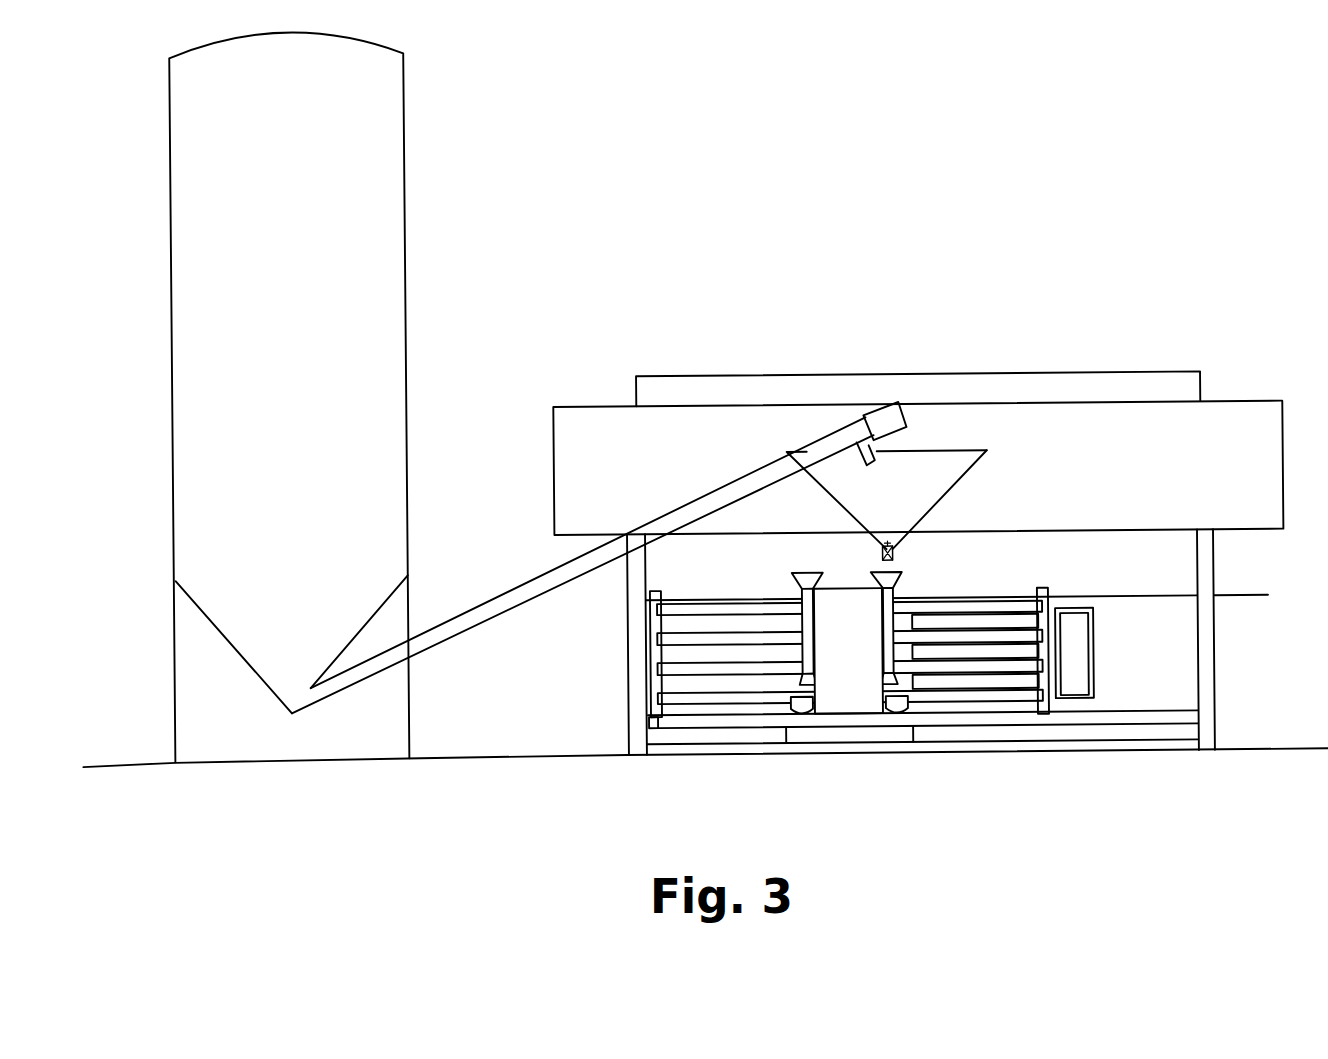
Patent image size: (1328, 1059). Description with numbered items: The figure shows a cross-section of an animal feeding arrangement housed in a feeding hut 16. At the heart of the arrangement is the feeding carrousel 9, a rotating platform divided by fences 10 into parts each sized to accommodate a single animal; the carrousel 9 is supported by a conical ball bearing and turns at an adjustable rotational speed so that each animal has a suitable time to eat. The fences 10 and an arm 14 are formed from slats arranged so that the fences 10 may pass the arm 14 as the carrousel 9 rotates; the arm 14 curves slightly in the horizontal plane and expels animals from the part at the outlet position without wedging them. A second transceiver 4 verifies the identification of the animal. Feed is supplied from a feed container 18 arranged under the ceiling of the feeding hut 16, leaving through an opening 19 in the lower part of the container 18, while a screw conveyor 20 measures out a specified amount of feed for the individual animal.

The second transceiver 4 is at (1073, 683).
The feeding carrousel 9 is at (855, 733).
The fences 10 is at (704, 693).
The arm 14 is at (965, 683).
The feeding hut 16 is at (1203, 563).
The feed container 18 is at (988, 453).
The opening 19 is at (898, 553).
The screw conveyor 20 is at (882, 555).